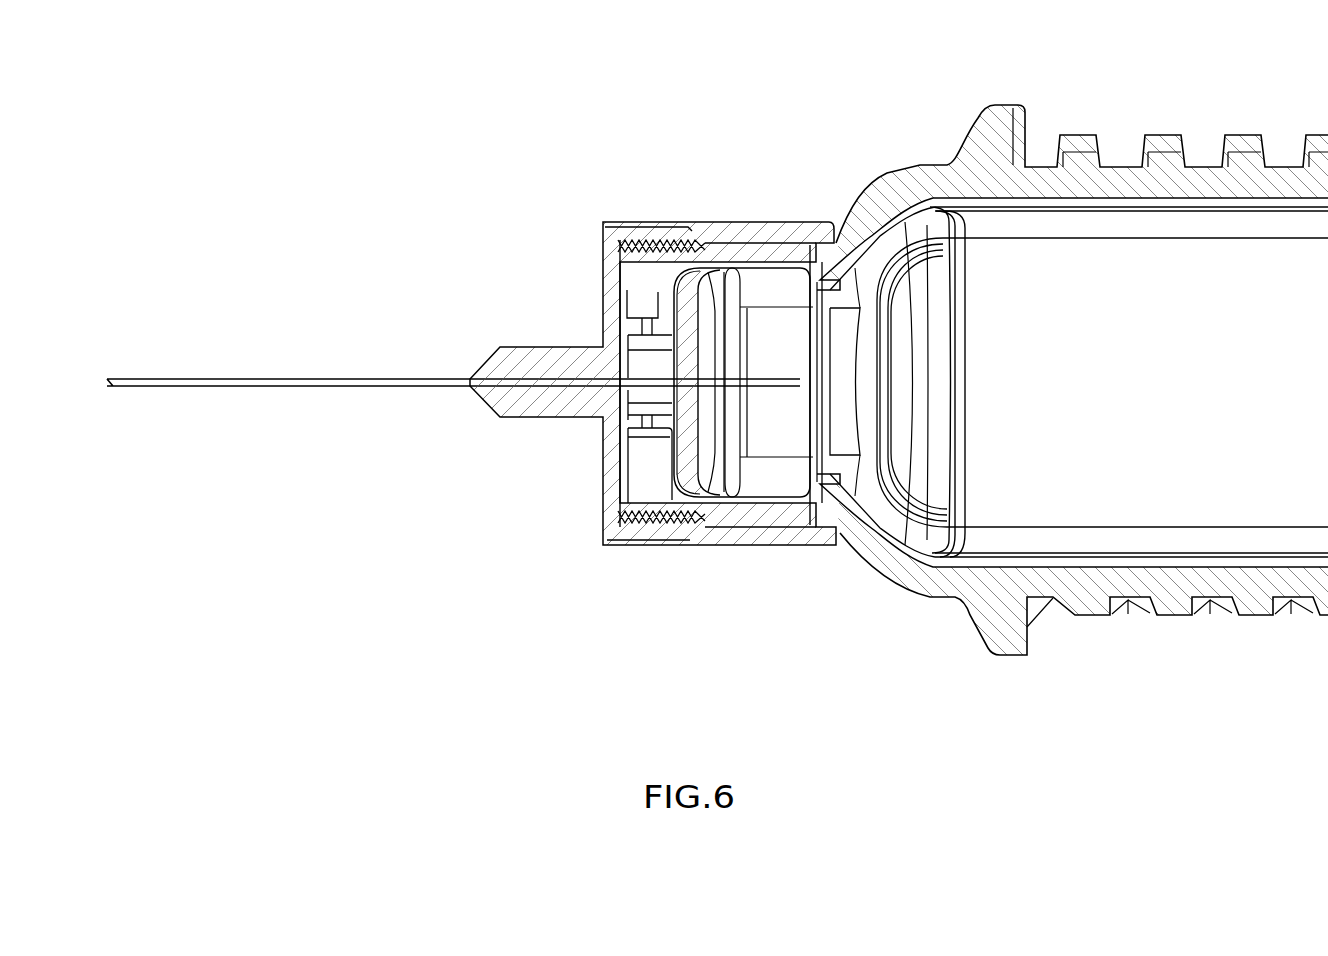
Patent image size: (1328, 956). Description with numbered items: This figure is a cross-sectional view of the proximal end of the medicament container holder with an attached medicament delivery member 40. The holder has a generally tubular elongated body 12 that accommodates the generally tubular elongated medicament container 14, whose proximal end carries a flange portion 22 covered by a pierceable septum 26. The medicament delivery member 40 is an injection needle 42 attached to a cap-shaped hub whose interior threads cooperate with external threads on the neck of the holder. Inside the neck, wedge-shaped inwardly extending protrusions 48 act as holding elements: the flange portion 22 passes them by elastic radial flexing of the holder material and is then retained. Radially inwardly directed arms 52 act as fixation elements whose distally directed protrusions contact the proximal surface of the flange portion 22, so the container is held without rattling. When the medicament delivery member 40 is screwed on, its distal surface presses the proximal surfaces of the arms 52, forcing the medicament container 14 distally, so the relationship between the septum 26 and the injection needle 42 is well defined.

The tubular elongated body 12 is at (985, 600).
The medicament container 14 is at (1110, 258).
The flange portion 22 is at (763, 285).
The septum 26 is at (697, 534).
The medicament delivery member 40 is at (572, 172).
The injection needle 42 is at (310, 378).
The wedge-shaped inwardly extending protrusions 48 is at (827, 506).
The radially inwardly directed arms 52 is at (612, 305).